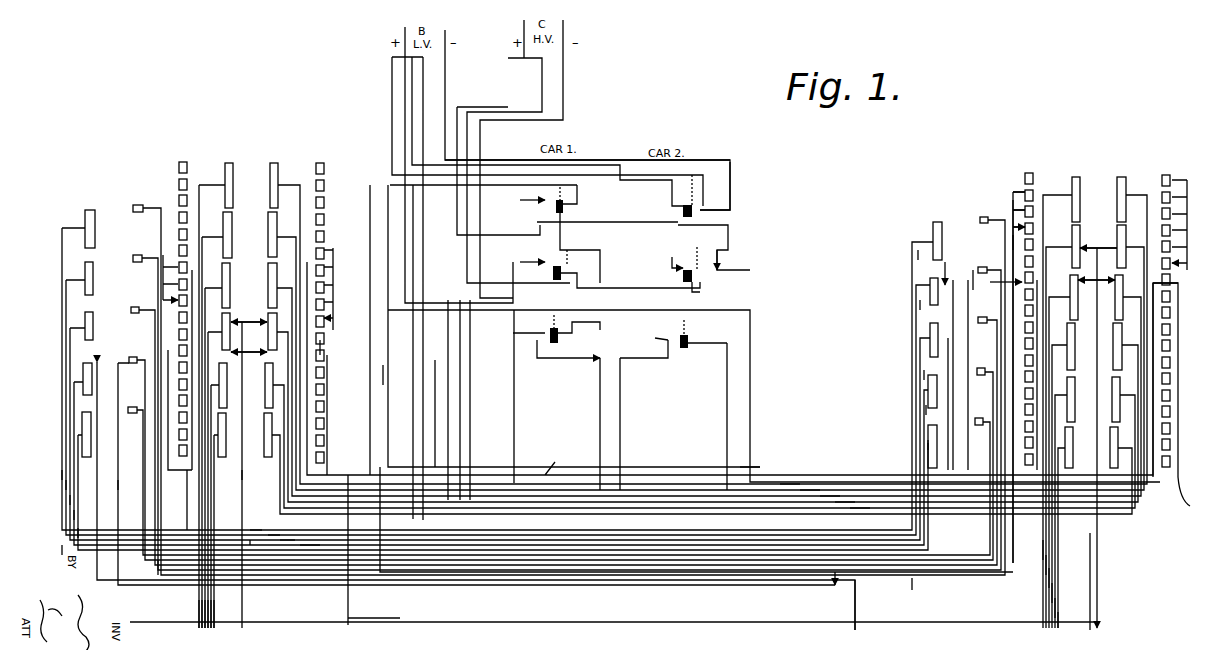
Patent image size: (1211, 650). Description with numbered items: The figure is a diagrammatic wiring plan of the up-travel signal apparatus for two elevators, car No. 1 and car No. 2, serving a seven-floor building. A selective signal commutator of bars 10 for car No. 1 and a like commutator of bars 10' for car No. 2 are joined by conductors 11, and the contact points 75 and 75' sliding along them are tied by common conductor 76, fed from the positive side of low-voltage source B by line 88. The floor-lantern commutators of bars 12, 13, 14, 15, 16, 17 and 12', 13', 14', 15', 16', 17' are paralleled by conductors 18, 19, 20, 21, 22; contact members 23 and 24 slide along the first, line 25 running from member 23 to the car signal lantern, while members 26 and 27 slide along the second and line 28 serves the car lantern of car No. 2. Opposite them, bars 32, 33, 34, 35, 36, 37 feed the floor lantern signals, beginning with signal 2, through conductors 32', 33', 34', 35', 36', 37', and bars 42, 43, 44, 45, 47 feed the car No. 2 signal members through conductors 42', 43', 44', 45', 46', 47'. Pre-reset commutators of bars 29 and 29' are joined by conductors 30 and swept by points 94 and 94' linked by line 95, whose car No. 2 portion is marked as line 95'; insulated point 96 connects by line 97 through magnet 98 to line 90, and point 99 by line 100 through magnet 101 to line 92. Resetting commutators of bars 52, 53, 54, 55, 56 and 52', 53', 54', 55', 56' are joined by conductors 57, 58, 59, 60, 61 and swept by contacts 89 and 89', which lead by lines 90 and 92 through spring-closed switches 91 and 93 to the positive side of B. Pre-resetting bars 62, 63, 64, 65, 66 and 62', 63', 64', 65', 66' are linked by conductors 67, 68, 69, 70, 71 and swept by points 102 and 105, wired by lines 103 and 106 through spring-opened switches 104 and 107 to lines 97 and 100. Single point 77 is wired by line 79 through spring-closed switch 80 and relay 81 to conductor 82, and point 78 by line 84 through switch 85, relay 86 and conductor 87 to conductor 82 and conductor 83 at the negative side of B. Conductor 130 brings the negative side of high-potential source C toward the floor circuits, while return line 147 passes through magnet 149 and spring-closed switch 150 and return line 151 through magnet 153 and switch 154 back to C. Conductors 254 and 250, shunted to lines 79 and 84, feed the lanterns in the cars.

The first elevator car 1 is at (543, 131).
The floor lantern signal 2 is at (486, 288).
The selective signal commutator bars 10 is at (337, 313).
The selective signal commutator bars 10' is at (1156, 306).
The conductors 11 is at (307, 262).
The commutator bar 12 is at (689, 463).
The commutator bar 13 is at (691, 435).
The commutator bar 14 is at (691, 399).
The commutator bar 15 is at (692, 374).
The commutator bar 16 is at (695, 346).
The commutator bar 17 is at (708, 312).
The commutator bar 12' is at (1107, 447).
The commutator bar 13' is at (1109, 399).
The commutator bar 14' is at (1111, 346).
The commutator bar 15' is at (1110, 297).
The commutator bar 16' is at (1109, 246).
The commutator bar 17' is at (1109, 199).
The conductor 18 is at (855, 510).
The conductor 19 is at (840, 504).
The conductor 20 is at (825, 498).
The conductor 21 is at (805, 492).
The conductor 22 is at (790, 484).
The contact member 23 is at (245, 335).
The second contact member 24 is at (252, 352).
The line 25 is at (243, 510).
The contact member 26 is at (1092, 250).
The contact member 27 is at (1104, 280).
The line 28 is at (1090, 567).
The commutator bars 29 is at (198, 298).
The commutator bars 29' is at (1042, 305).
The conductors 30 is at (192, 270).
The commutator bar 32 is at (229, 520).
The commutator bar 33 is at (229, 495).
The commutator bar 34 is at (249, 475).
The commutator bar 35 is at (231, 445).
The commutator bar 36 is at (229, 420).
The commutator bar 37 is at (232, 383).
The conductor 32' is at (224, 603).
The conductor 33' is at (223, 610).
The conductor 34' is at (221, 614).
The conductor 35' is at (187, 614).
The conductor 36' is at (186, 610).
The conductor 37' is at (184, 603).
The commutator bar 42 is at (1075, 527).
The commutator bar 43 is at (1074, 502).
The commutator bar 44 is at (1073, 475).
The commutator bar 45 is at (1072, 451).
The conductor 46' is at (1074, 418).
The commutator bar 47 is at (1075, 384).
The conductor 42' is at (1065, 549).
The conductor 43' is at (1066, 564).
The conductor 44' is at (1068, 577).
The conductor 45' is at (1069, 592).
The conductor 47' is at (1072, 619).
The commutator bar 52 is at (556, 470).
The commutator bar 53 is at (557, 448).
The commutator bar 54 is at (558, 426).
The commutator bar 55 is at (562, 403).
The commutator bar 56 is at (560, 379).
The commutator bar 52' is at (982, 428).
The commutator bar 53' is at (983, 378).
The commutator bar 54' is at (988, 309).
The commutator bar 55' is at (990, 260).
The commutator bar 56' is at (975, 208).
The conductor 57 is at (310, 550).
The conductor 58 is at (282, 545).
The conductor 59 is at (268, 540).
The conductor 60 is at (262, 535).
The conductor 61 is at (252, 538).
The commutator bar 62 is at (479, 481).
The commutator bar 63 is at (479, 454).
The commutator bar 64 is at (500, 426).
The commutator bar 65 is at (498, 398).
The commutator bar 66 is at (497, 370).
The commutator bar 62' is at (908, 443).
The commutator bar 63' is at (909, 391).
The commutator bar 64' is at (908, 339).
The commutator bar 65' is at (910, 291).
The commutator bar 66' is at (919, 236).
The conductor 67 is at (62, 549).
The conductor 68 is at (78, 533).
The conductor 69 is at (62, 473).
The conductor 70 is at (74, 514).
The conductor 71 is at (70, 498).
The contact points 75 is at (348, 289).
The contact points 75' is at (1187, 215).
The common conductor 76 is at (757, 468).
The contact point 77 is at (321, 352).
The contact point 78 is at (1178, 290).
The line 79 is at (348, 475).
The spring-closed switch 80 is at (553, 273).
The magnet or relay 81 is at (556, 210).
The conductor 82 is at (495, 160).
The conductor 83 is at (446, 70).
The line 84 is at (730, 228).
The spring-closed switch 85 is at (683, 278).
The magnet or relay 86 is at (683, 212).
The conductor 87 is at (730, 162).
The line 88 is at (413, 377).
The slidable contact member 89 is at (468, 474).
The slidable contact member 89' is at (961, 268).
The line 90 is at (113, 490).
The spring-closed switch 91 is at (520, 200).
The line 92 is at (380, 405).
The spring-closed switch 93 is at (680, 202).
The contact points 94 is at (171, 265).
The contact points 94' is at (1006, 361).
The line 95 is at (532, 588).
The conductor car 2 95' is at (995, 241).
The contact point 96 is at (168, 350).
The line 97 is at (165, 520).
The magnet 98 is at (558, 345).
The contact point 99 is at (998, 287).
The line 100 is at (423, 298).
The magnet 101 is at (684, 348).
The contact point 102 is at (96, 361).
The line 103 is at (66, 485).
The spring-opened switch 104 is at (556, 345).
The contact point 105 is at (947, 273).
The line 106 is at (620, 430).
The spring-opened switch 107 is at (647, 343).
The conductor 130 is at (564, 95).
The return conductor 147 is at (458, 107).
The magnet 149 is at (585, 275).
The spring-closed switch 150 is at (547, 248).
The return line 151 is at (542, 95).
The magnet 153 is at (698, 283).
The spring-closed switch 154 is at (675, 262).
The conductor 250 is at (856, 608).
The conductor 254 is at (385, 612).